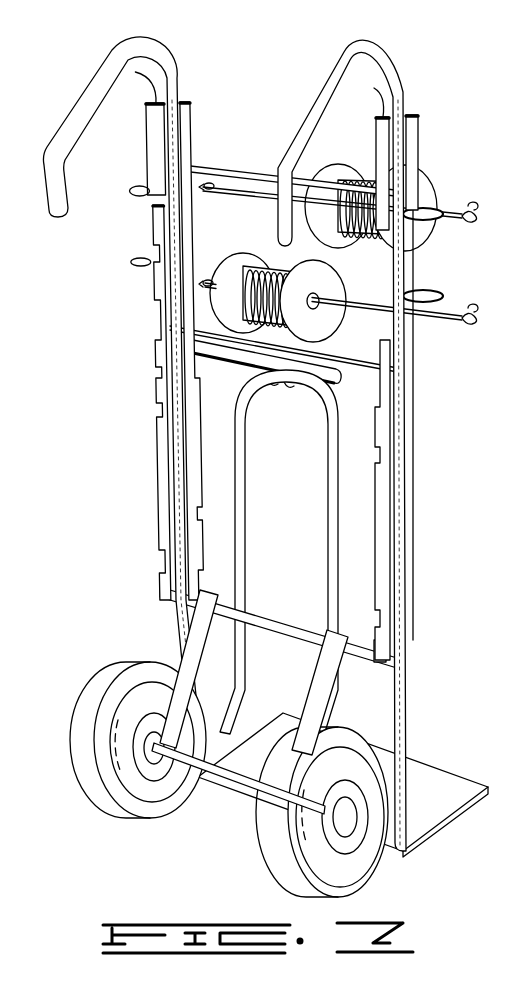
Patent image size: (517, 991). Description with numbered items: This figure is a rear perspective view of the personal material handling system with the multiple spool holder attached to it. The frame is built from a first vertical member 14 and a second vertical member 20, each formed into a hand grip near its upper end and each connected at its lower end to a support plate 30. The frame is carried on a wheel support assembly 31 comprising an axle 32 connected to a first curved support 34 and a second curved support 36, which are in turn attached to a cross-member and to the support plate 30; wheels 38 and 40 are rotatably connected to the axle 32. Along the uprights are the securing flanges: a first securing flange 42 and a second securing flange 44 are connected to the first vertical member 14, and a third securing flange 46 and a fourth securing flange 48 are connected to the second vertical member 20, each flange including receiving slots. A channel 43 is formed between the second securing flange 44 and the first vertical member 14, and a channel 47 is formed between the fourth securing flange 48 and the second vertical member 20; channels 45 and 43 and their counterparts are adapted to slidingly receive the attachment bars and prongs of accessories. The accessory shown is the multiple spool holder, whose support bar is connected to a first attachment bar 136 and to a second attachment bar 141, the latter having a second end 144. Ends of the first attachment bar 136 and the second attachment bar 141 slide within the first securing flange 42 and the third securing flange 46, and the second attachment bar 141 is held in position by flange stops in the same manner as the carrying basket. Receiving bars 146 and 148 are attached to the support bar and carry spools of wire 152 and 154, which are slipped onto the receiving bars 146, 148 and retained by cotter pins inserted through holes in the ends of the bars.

The first vertical member 14 is at (400, 66).
The second vertical member 20 is at (178, 82).
The support plate 30 is at (453, 775).
The wheel support assembly 31 is at (102, 652).
The axle 32 is at (233, 777).
The first curved support 34 is at (345, 677).
The second curved support 36 is at (187, 643).
The wheel 38 is at (362, 866).
The wheel 40 is at (92, 688).
The first securing flange 42 is at (420, 124).
The channel 43 is at (367, 94).
The second securing flange 44 is at (376, 140).
The channel 45 is at (187, 104).
The third securing flange 46 is at (189, 122).
The channel 47 is at (132, 83).
The fourth securing flange 48 is at (151, 136).
The first attachment bar 136 is at (250, 170).
The second attachment bar 141 is at (362, 347).
The second end 144 is at (446, 500).
The receiving bar 146 is at (445, 226).
The receiving bar 148 is at (443, 308).
The spool 152 is at (515, 177).
The spool 154 is at (250, 248).